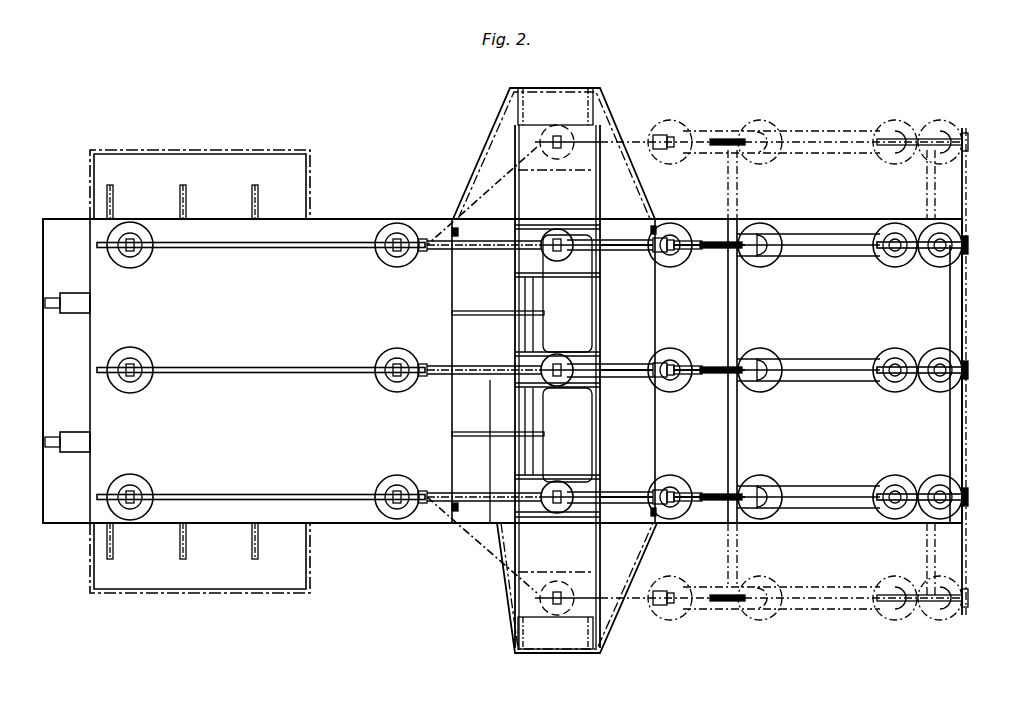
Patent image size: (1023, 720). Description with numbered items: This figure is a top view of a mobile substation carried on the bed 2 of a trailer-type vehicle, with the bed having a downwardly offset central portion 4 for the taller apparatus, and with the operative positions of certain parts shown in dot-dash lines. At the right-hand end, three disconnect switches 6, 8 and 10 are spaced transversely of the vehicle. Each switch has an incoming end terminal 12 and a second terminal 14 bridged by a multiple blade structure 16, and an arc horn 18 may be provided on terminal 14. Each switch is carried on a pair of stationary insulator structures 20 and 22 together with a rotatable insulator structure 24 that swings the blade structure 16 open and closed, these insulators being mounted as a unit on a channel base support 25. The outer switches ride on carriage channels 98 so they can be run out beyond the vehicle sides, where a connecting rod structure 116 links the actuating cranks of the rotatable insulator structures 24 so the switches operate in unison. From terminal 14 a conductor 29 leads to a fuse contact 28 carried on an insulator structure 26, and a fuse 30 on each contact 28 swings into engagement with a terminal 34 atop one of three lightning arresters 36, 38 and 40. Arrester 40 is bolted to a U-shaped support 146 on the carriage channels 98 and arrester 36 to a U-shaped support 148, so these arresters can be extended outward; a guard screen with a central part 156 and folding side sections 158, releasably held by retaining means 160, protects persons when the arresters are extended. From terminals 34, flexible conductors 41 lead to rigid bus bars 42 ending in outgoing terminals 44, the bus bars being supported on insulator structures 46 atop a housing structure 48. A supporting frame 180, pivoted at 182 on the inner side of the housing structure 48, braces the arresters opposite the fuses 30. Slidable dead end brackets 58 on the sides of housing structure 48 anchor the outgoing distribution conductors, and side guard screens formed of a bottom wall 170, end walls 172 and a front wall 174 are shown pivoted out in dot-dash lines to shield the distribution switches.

The bed 2 is at (800, 232).
The downwardly offset central portion 4 is at (617, 219).
The disconnect switch 6 is at (812, 279).
The disconnect switch 8 is at (812, 403).
The disconnect switch 10 is at (818, 485).
The end terminal 12 is at (970, 246).
The second terminal 14 is at (742, 240).
The multiple blade structure 16 is at (828, 240).
The arc horn 18 is at (718, 147).
The stationary insulator structure 20 is at (770, 232).
The stationary insulator structure 22 is at (893, 224).
The rotatable insulator structure 24 is at (930, 226).
The channel base support 25 is at (858, 257).
The insulator structure 26 is at (670, 228).
The fuse contact 28 is at (676, 258).
The conductor 29 is at (704, 240).
The fuse 30 is at (628, 252).
The terminal 34 is at (557, 230).
The lightning arrester 36 is at (538, 488).
The lightning arrester 38 is at (566, 345).
The lightning arrester 40 is at (588, 265).
The flexible conductor 41 is at (432, 364).
The bus bar 42 is at (277, 250).
The outgoing terminal 44 is at (100, 248).
The insulator structure 46 is at (146, 257).
The housing structure 48 is at (335, 219).
The dead end bracket 58 is at (114, 189).
The carriage channel 98 is at (738, 296).
The connecting rod structure 116 is at (970, 214).
The U-shaped support 146 is at (580, 275).
The U-shaped support 148 is at (583, 470).
The central part 156 is at (580, 523).
The side section 158 is at (514, 381).
The retaining means 160 is at (459, 232).
The bottom wall 170 is at (273, 165).
The end wall 172 is at (88, 188).
The front wall 174 is at (208, 152).
The supporting frame 180 is at (491, 311).
The pivot 182 is at (540, 256).